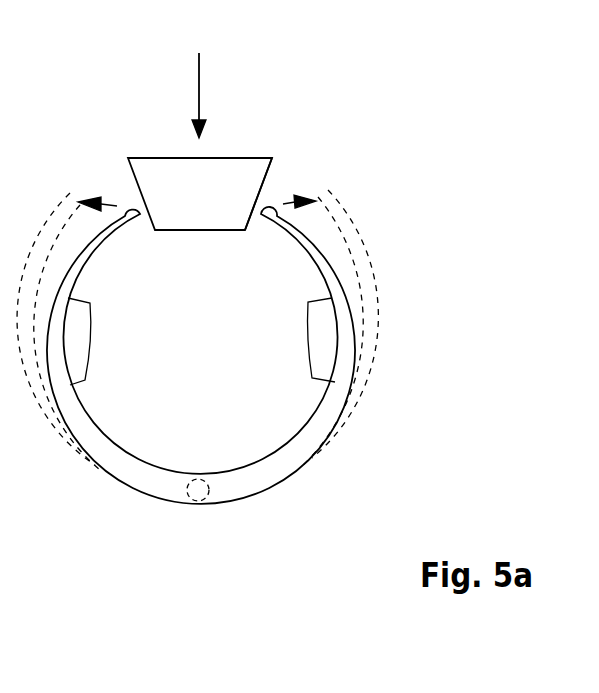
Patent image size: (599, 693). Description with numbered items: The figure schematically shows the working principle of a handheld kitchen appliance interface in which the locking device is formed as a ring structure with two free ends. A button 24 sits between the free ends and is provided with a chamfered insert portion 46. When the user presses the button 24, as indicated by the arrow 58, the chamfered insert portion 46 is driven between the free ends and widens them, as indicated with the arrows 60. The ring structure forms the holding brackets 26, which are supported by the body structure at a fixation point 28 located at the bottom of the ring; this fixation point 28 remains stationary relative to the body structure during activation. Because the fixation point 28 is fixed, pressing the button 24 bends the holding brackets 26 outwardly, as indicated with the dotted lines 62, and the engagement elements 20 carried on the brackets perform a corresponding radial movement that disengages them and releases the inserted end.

The engagement element 20 is at (312, 350).
The button 24 is at (240, 157).
The holding bracket 26 is at (88, 257).
The fixation point 28 is at (193, 496).
The chamfered insert portion 46 is at (265, 179).
The arrow indicating pressing of the button 58 is at (199, 72).
The arrows indicating widening of the free ends 60 is at (117, 206).
The dotted lines indicating outwardly bent holding brackets 62 is at (373, 264).